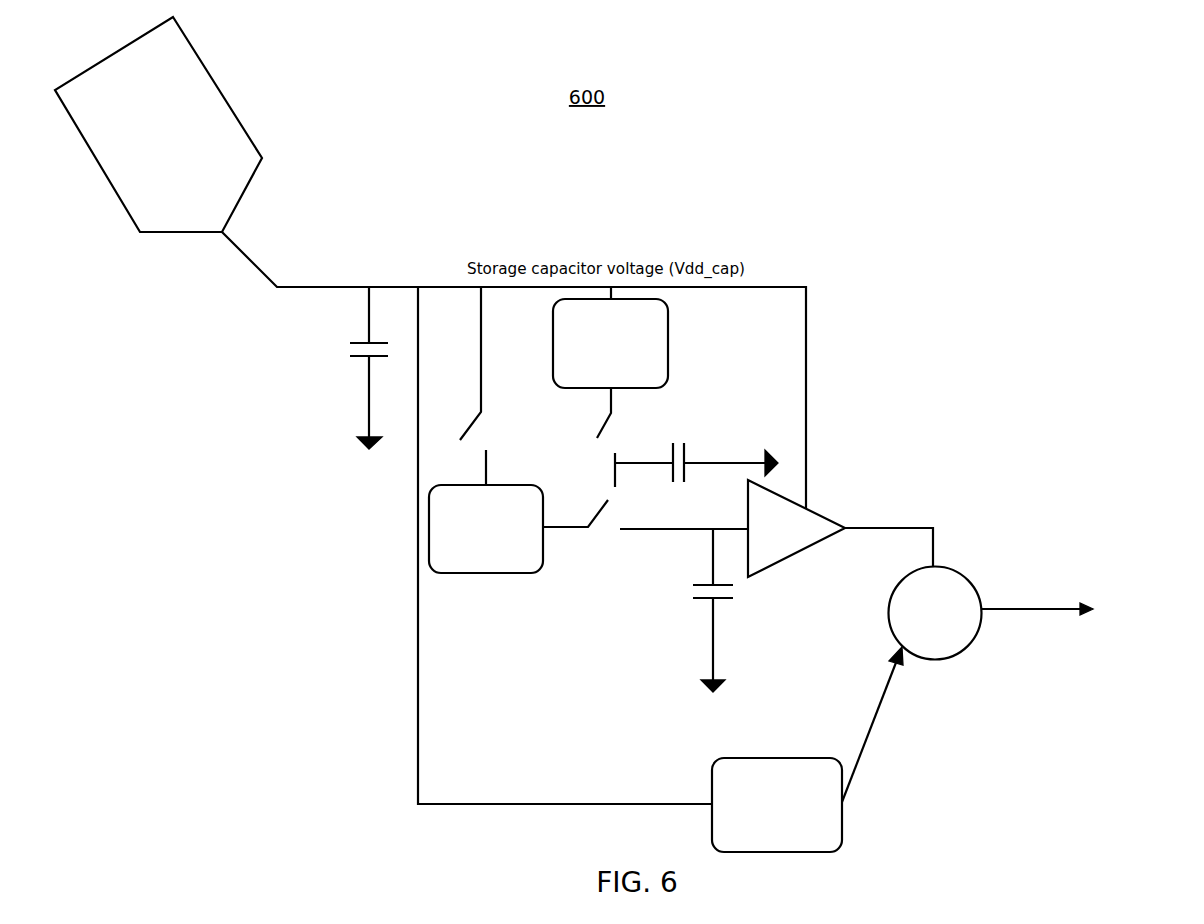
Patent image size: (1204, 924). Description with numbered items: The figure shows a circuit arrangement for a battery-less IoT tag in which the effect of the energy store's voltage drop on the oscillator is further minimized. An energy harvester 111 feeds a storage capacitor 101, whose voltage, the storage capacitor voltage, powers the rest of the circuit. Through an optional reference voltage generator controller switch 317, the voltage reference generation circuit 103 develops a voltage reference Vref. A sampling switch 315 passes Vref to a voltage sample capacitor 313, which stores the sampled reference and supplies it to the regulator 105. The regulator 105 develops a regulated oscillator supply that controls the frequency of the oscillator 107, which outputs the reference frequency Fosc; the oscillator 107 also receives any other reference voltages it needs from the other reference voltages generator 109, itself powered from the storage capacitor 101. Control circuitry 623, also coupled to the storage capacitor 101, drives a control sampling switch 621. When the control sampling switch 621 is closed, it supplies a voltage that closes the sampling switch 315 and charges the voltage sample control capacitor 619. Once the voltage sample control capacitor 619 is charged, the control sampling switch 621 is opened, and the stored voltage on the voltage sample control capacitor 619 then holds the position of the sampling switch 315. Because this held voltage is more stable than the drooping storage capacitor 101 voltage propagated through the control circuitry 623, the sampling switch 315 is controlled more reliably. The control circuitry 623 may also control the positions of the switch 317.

The energy harvester 111 is at (218, 133).
The storage capacitor 101 is at (360, 350).
The reference voltage generator controller switch 317 is at (482, 437).
The voltage reference generation circuit 103 is at (490, 562).
The sampling switch 315 is at (592, 535).
The control circuitry 623 is at (655, 355).
The control sampling switch 621 is at (608, 440).
The voltage sample control capacitor 619 is at (682, 438).
The voltage sample capacitor 313 is at (733, 593).
The regulator 105 is at (808, 518).
The oscillator 107 is at (950, 635).
The other reference voltages generator 109 is at (818, 817).